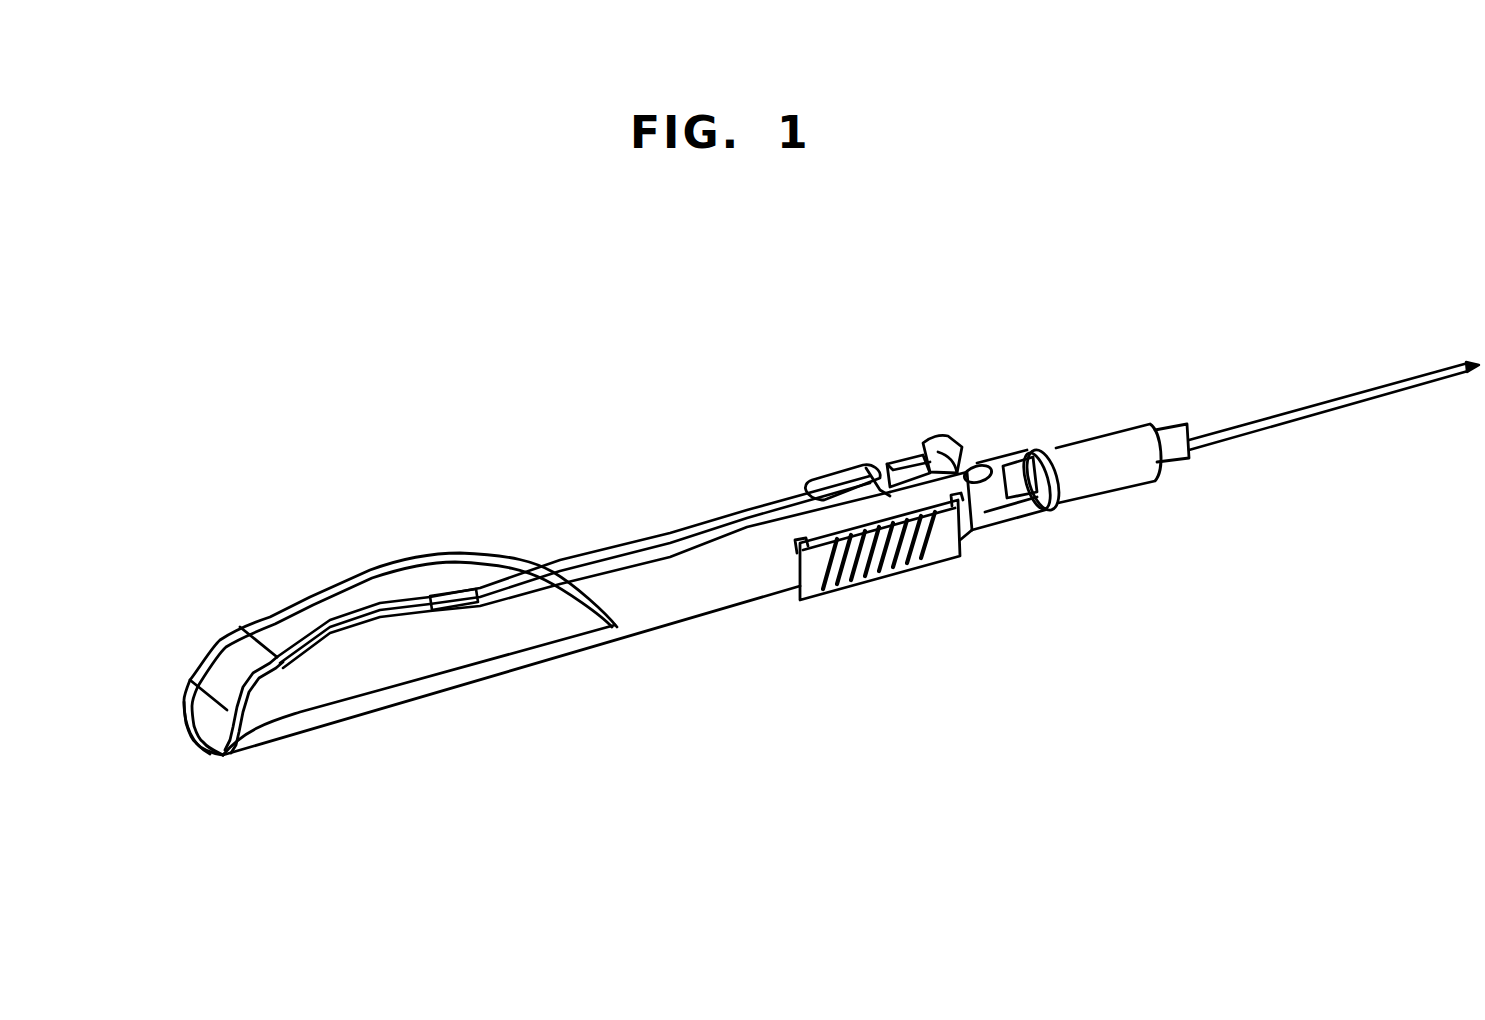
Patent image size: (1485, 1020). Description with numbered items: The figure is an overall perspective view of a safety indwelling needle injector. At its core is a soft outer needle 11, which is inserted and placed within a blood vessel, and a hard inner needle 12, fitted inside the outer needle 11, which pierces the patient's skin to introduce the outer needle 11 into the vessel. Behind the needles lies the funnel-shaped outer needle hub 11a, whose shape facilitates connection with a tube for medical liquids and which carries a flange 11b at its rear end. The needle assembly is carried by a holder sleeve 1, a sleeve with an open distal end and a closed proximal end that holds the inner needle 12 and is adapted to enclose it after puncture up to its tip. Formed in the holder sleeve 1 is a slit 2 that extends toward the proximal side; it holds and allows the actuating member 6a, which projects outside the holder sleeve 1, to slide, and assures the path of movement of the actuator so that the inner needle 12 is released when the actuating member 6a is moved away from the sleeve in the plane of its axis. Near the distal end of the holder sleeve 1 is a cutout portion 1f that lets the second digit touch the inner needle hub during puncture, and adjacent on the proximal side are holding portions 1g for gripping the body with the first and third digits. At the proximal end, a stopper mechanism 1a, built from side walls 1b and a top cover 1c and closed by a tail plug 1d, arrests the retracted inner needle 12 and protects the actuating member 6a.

The holder sleeve 1 is at (677, 624).
The stopper mechanism 1a is at (401, 443).
The side walls 1b is at (372, 690).
The top cover 1c is at (417, 578).
The tail plug 1d is at (186, 712).
The cutout portion 1f is at (1020, 468).
The holding portions 1g is at (858, 600).
The slit 2 is at (668, 538).
The actuating member 6a is at (892, 462).
The outer needle 11 is at (1290, 422).
The outer needle hub 11a is at (1116, 498).
The flange 11b is at (1050, 505).
The inner needle 12 is at (1455, 379).